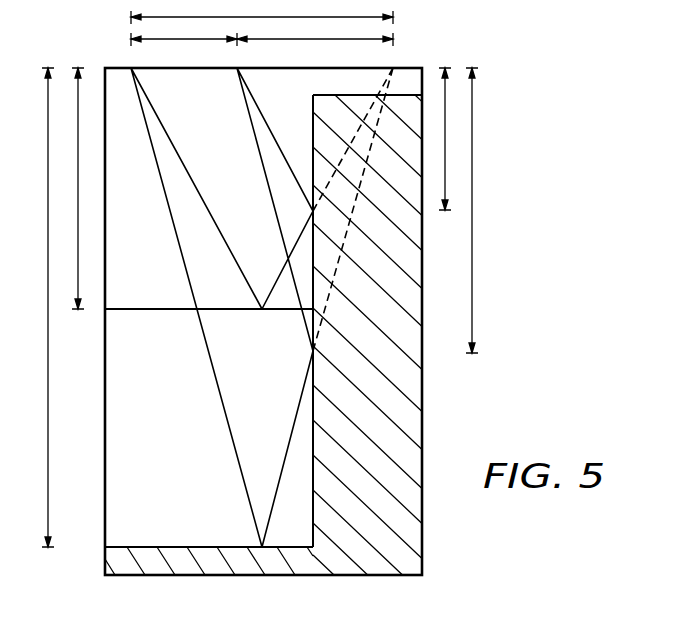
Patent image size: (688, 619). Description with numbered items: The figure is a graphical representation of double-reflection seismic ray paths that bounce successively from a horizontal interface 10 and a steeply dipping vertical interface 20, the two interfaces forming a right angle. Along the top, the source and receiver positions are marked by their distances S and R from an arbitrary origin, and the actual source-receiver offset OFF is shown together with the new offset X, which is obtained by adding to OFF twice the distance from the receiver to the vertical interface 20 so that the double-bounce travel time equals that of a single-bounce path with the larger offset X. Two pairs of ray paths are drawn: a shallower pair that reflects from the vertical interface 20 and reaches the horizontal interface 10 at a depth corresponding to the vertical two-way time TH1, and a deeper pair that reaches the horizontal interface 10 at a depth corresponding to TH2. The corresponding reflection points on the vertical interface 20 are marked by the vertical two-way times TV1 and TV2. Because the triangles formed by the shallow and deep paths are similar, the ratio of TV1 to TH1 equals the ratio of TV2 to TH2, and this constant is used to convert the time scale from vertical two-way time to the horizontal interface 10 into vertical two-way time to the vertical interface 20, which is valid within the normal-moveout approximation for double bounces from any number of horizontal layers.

The horizontal interface 10 is at (167, 546).
The vertical interface 20 is at (313, 121).
The source distance S is at (194, 298).
The receiver distance R is at (272, 298).
The new offset X is at (262, 12).
The source-receiver offset OFF is at (262, 34).
The vertical two-way time to first horizontal interface TH1 is at (72, 188).
The vertical two-way time to second horizontal interface TH2 is at (42, 307).
The vertical two-way time to vertical interface for first path TV1 is at (451, 139).
The vertical two-way time to vertical interface for second path TV2 is at (477, 210).